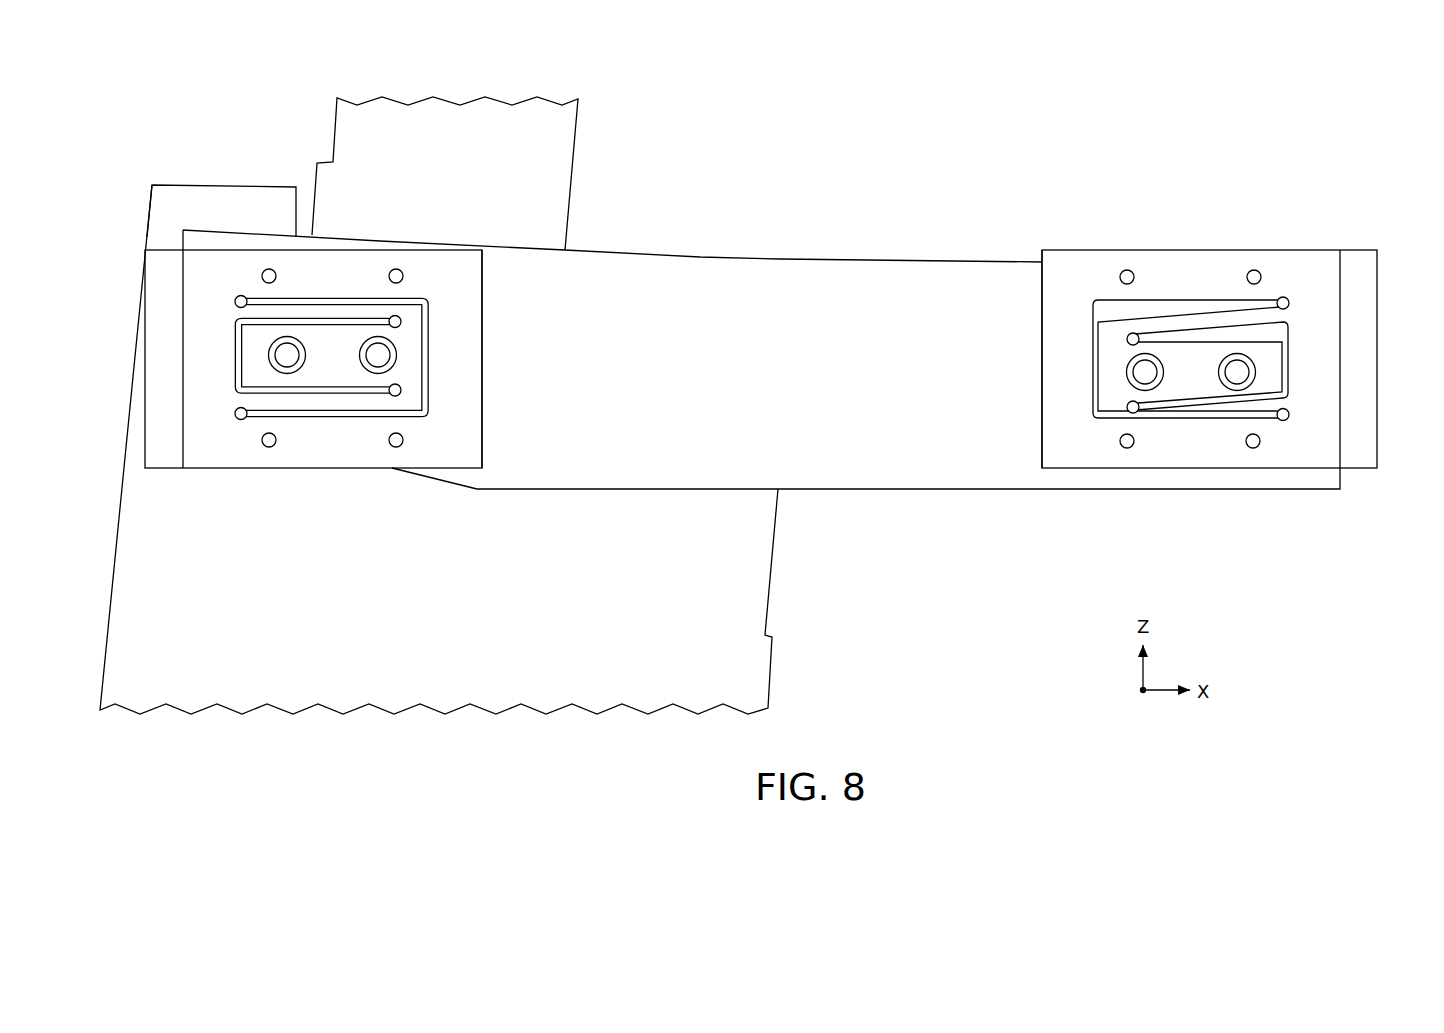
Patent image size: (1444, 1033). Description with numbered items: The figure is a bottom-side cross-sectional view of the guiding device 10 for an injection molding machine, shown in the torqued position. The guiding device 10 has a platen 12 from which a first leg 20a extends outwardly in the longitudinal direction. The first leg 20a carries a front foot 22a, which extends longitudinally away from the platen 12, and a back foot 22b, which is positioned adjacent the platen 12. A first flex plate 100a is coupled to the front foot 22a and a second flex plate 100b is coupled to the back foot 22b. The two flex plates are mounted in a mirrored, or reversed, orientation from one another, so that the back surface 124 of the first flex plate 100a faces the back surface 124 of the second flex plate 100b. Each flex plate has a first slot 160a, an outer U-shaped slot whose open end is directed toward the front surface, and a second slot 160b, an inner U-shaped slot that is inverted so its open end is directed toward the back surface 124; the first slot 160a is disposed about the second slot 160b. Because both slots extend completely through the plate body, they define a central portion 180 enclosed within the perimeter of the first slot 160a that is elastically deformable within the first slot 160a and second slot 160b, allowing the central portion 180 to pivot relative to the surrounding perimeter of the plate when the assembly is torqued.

The guiding device 10 is at (425, 449).
The platen 12 is at (476, 163).
The first leg 20a is at (761, 307).
The front foot 22a is at (1217, 152).
The back foot 22b is at (221, 173).
The first flex plate 100a is at (1243, 329).
The second flex plate 100b is at (286, 329).
The back surface 124 is at (762, 330).
The first slot 160a is at (762, 311).
The second slot 160b is at (785, 342).
The central portion 180 is at (762, 404).